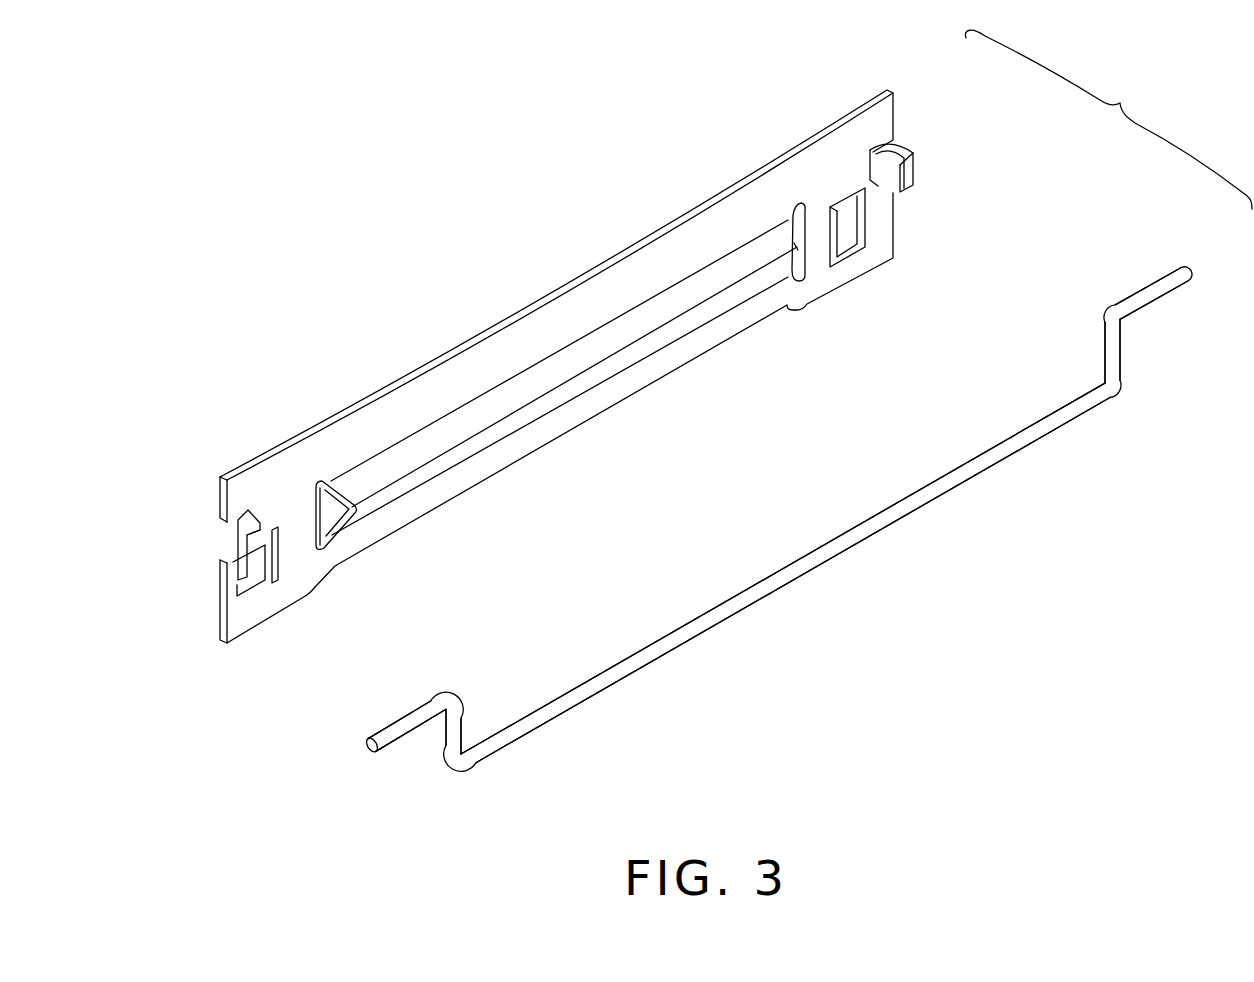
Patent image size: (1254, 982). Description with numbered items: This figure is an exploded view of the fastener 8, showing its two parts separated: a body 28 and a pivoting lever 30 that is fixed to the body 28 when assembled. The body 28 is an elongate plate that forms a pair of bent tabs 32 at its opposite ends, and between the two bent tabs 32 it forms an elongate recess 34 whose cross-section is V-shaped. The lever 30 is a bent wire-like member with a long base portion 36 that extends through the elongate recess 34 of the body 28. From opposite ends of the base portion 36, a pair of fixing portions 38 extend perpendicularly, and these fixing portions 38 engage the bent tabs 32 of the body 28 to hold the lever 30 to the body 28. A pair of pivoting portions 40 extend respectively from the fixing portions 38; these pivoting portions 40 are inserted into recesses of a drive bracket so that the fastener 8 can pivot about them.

The fastener 8 is at (1108, 119).
The body 28 is at (814, 150).
The pivoting lever 30 is at (938, 510).
The bent tabs 32 is at (910, 173).
The elongate recess 34 is at (328, 512).
The base portion 36 is at (738, 606).
The fixing portions 38 is at (1120, 352).
The pivoting portions 40 is at (1165, 283).